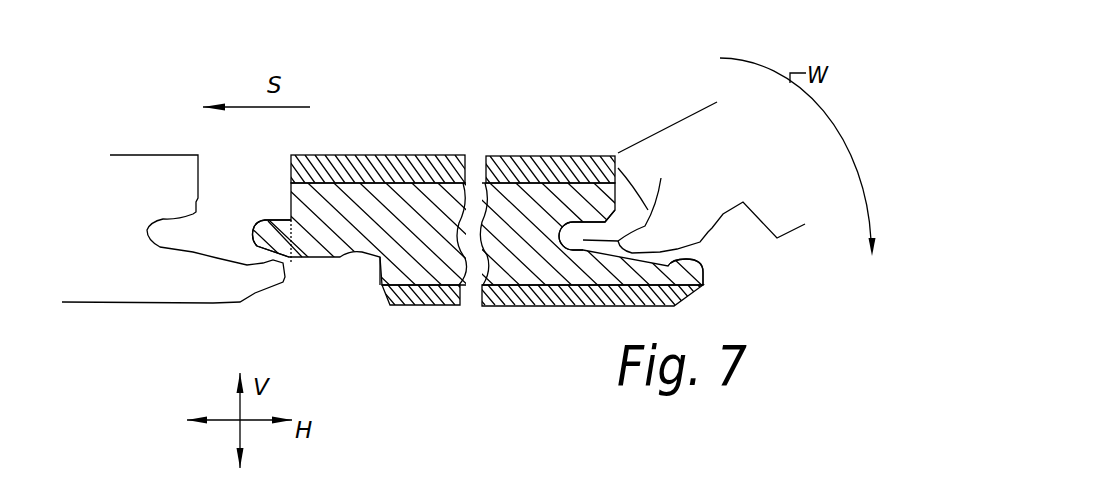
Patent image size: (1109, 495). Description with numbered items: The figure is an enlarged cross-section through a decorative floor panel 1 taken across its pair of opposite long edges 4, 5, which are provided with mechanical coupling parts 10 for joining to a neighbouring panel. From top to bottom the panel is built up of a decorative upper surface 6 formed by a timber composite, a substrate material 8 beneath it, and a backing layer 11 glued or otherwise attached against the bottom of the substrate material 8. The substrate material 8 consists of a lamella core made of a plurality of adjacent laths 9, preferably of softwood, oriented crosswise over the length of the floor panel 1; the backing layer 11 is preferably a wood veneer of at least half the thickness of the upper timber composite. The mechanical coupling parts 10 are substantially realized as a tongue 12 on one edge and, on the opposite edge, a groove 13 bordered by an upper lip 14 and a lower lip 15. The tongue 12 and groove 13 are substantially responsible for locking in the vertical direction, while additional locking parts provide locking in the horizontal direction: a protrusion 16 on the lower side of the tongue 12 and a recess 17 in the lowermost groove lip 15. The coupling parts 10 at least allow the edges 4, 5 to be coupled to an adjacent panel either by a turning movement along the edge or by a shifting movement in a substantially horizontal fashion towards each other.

The floor panel 1 is at (442, 336).
The long edge 4 is at (253, 225).
The long edge 5 is at (757, 208).
The decorative upper surface 6 is at (337, 155).
The substrate material 8 is at (537, 250).
The laths 9 is at (428, 257).
The mechanical coupling parts 10 is at (278, 298).
The backing layer 11 is at (492, 298).
The tongue 12 is at (302, 240).
The groove 13 is at (635, 196).
The upper lip 14 is at (648, 212).
The lower lip 15 is at (632, 306).
The protrusion 16 is at (350, 257).
The recess 17 is at (670, 263).